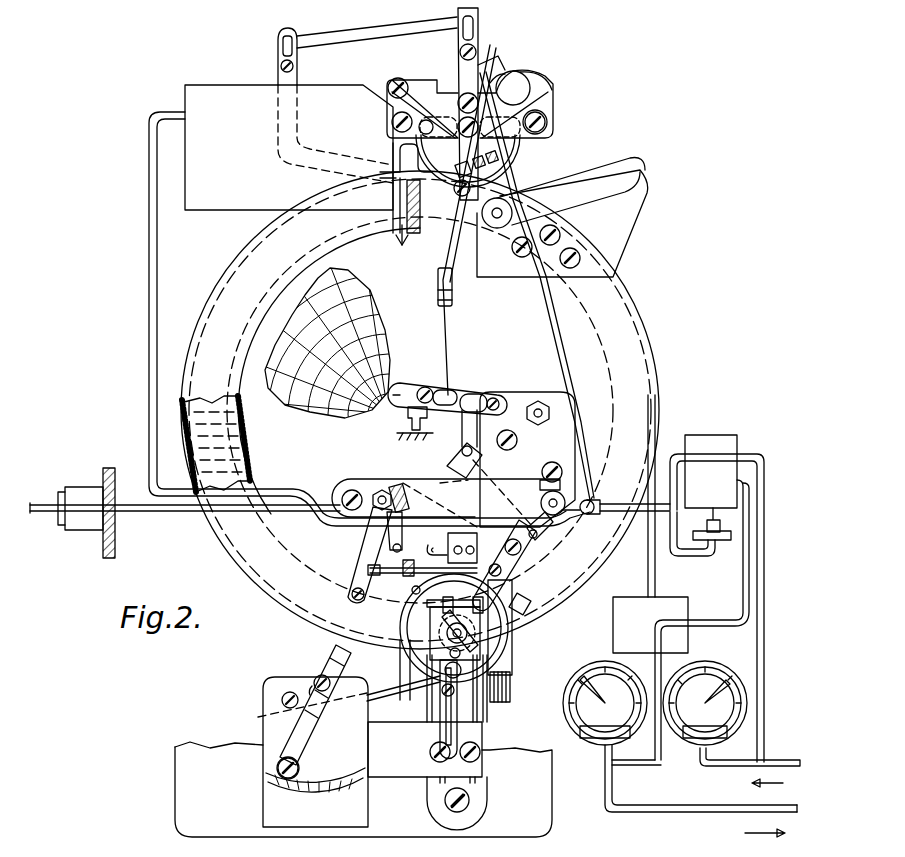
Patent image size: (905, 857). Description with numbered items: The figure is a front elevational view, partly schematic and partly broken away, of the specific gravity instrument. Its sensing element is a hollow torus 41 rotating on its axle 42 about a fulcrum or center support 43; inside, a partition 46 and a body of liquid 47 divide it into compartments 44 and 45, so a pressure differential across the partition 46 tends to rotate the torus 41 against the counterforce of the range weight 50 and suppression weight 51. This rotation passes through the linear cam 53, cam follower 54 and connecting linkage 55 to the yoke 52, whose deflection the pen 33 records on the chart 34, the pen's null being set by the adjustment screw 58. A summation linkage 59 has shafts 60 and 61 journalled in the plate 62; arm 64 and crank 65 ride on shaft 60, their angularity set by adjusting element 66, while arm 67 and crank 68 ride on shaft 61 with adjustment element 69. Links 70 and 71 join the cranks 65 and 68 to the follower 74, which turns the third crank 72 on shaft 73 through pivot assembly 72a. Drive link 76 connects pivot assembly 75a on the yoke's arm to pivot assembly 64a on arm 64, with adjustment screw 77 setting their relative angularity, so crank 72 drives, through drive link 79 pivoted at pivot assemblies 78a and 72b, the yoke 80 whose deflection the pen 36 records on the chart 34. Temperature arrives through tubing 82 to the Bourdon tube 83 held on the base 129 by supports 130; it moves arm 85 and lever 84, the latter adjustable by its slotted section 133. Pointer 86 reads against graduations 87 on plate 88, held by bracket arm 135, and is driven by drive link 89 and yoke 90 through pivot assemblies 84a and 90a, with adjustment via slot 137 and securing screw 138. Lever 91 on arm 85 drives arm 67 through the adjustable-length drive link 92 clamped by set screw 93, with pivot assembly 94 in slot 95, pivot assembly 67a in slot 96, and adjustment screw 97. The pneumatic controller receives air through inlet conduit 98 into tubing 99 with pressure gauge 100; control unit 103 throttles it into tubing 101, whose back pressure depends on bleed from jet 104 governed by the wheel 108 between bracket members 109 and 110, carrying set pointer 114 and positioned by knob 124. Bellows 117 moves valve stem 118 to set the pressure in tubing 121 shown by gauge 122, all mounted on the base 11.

The base 11 is at (250, 838).
The pen 33 is at (452, 280).
The chart 34 is at (378, 340).
The pen 36 is at (452, 296).
The hollow torus 41 is at (612, 312).
The axle 42 is at (407, 420).
The fulcrum or center support 43 is at (398, 437).
The compartment 44 is at (414, 236).
The compartment 45 is at (396, 238).
The partition 46 is at (401, 240).
The body of liquid 47 is at (228, 443).
The range weight 50 is at (510, 690).
The suppression weight 51 is at (683, 590).
The yoke 52 is at (478, 53).
The linear cam 53 is at (636, 205).
The cam follower 54 is at (518, 208).
The connecting linkage 55 is at (352, 33).
The adjustment screw 58 is at (500, 166).
The summation linkage 59 is at (339, 481).
The shaft 60 is at (555, 514).
The shaft 61 is at (382, 490).
The plate 62 is at (528, 392).
The arm 64 is at (596, 502).
The pivot assembly 64a is at (592, 514).
The crank 65 is at (540, 540).
The adjusting element 66 is at (546, 480).
The arm 67 is at (386, 548).
The pivot assembly 67a is at (352, 594).
The crank 68 is at (372, 540).
The adjustment element 69 is at (409, 498).
The link 70 is at (468, 493).
The link 71 is at (456, 470).
The third crank 72 is at (458, 392).
The pivot assembly 72a is at (462, 410).
The pivot assembly 72b is at (445, 388).
The shaft 73 is at (539, 420).
The follower 74 is at (462, 432).
The pivot assembly 75a is at (553, 124).
The drive link 76 is at (560, 345).
The adjustment screw 77 is at (500, 59).
The pivot assembly 78a is at (436, 95).
The drive link 79 is at (440, 282).
The yoke 80 is at (518, 65).
The tubing 82 is at (170, 513).
The Bourdon tube 83 is at (402, 650).
The lever 84 is at (458, 712).
The pivot assembly 84a is at (460, 690).
The arm 85 is at (400, 620).
The pointer 86 is at (276, 760).
The graduations 87 is at (270, 786).
The plate 88 is at (340, 822).
The drive link 89 is at (398, 705).
The yoke 90 is at (335, 650).
The pivot assembly 90a is at (258, 716).
The lever 91 is at (467, 636).
The adjustable-length drive link 92 is at (402, 566).
The set screw 93 is at (412, 593).
The pivot assembly 94 is at (505, 565).
The slot 95 is at (514, 596).
The slot 96 is at (368, 570).
The adjustment screw 97 is at (470, 616).
The inlet conduit 98 is at (768, 762).
The tubing 99 is at (764, 622).
The pressure gauge 100 is at (688, 742).
The tubing 101 is at (148, 238).
The control unit 103 is at (702, 435).
The jet 104 is at (392, 158).
The wheel 108 is at (512, 150).
The bracket member 109 is at (548, 108).
The bracket member 110 is at (386, 105).
The set pointer 114 is at (452, 304).
The bellows 117 is at (732, 534).
The valve stem 118 is at (720, 512).
The tubing 121 is at (727, 620).
The gauge 122 is at (585, 738).
The knob 124 is at (522, 82).
The base 129 is at (472, 792).
The support 130 is at (462, 652).
The slotted section 133 is at (448, 542).
The bracket arm 135 is at (400, 770).
The slot 137 is at (300, 690).
The securing screw 138 is at (316, 680).